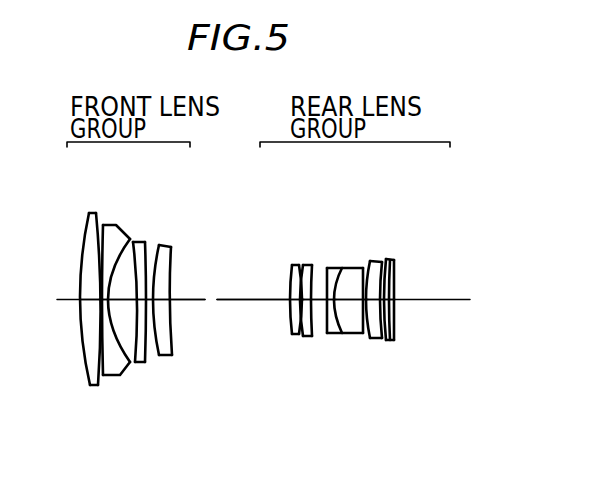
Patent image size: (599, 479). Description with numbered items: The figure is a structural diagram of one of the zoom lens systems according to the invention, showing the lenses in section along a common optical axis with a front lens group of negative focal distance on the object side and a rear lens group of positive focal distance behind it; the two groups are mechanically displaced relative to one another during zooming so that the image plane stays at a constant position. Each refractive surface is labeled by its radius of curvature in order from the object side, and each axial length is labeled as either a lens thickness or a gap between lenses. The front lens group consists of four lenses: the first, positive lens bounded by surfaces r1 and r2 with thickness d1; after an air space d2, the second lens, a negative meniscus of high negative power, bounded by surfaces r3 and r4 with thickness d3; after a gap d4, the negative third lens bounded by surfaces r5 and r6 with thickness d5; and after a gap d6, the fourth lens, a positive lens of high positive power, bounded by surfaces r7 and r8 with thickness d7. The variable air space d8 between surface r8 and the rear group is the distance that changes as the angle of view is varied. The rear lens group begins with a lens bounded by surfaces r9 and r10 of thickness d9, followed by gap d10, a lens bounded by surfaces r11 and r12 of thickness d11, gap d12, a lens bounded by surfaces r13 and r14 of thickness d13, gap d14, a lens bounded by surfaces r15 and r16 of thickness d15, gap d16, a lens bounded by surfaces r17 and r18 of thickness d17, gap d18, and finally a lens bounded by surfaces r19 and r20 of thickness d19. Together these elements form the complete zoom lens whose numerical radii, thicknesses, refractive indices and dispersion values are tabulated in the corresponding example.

The radius of curvature of first refractive surface r1 is at (89, 214).
The radius of curvature of second refractive surface r2 is at (96, 214).
The radius of curvature of third refractive surface r3 is at (103, 225).
The radius of curvature of fourth refractive surface r4 is at (117, 225).
The radius of curvature of fifth refractive surface r5 is at (134, 242).
The radius of curvature of sixth refractive surface r6 is at (146, 242).
The radius of curvature of seventh refractive surface r7 is at (160, 245).
The radius of curvature of eighth refractive surface r8 is at (172, 247).
The radius of curvature of ninth refractive surface r9 is at (292, 267).
The radius of curvature of tenth refractive surface r10 is at (297, 266).
The radius of curvature of eleventh refractive surface r11 is at (303, 266).
The radius of curvature of twelfth refractive surface r12 is at (312, 266).
The radius of curvature of thirteenth refractive surface r13 is at (329, 268).
The radius of curvature of fourteenth refractive surface r14 is at (341, 268).
The radius of curvature of fifteenth refractive surface r15 is at (362, 268).
The radius of curvature of sixteenth refractive surface r16 is at (373, 261).
The radius of curvature of seventeenth refractive surface r17 is at (382, 262).
The radius of curvature of eighteenth refractive surface r18 is at (387, 262).
The radius of curvature of nineteenth refractive surface r19 is at (392, 272).
The radius of curvature of twentieth refractive surface r20 is at (394, 286).
The thickness of first lens d1 is at (82, 310).
The distance between first and second lenses d2 is at (96, 306).
The thickness of second lens d3 is at (105, 306).
The distance between second and third lenses d4 is at (119, 306).
The thickness of third lens d5 is at (141, 306).
The distance between third and fourth lenses d6 is at (150, 306).
The thickness of fourth lens d7 is at (164, 306).
The distance between front and rear lens groups d8 is at (210, 303).
The thickness of first rear-group lens d9 is at (292, 307).
The distance between first and second rear-group lenses d10 is at (300, 306).
The thickness of second rear-group lens d11 is at (306, 306).
The distance between second and third rear-group lenses d12 is at (318, 306).
The thickness of third rear-group lens d13 is at (333, 306).
The distance between third and fourth rear-group lenses d14 is at (349, 306).
The thickness of fourth rear-group lens d15 is at (366, 306).
The distance between fourth and fifth rear-group lenses d16 is at (376, 306).
The thickness of fifth rear-group lens d17 is at (384, 308).
The distance between fifth and sixth rear-group lenses d18 is at (390, 309).
The thickness of sixth rear-group lens d19 is at (392, 311).